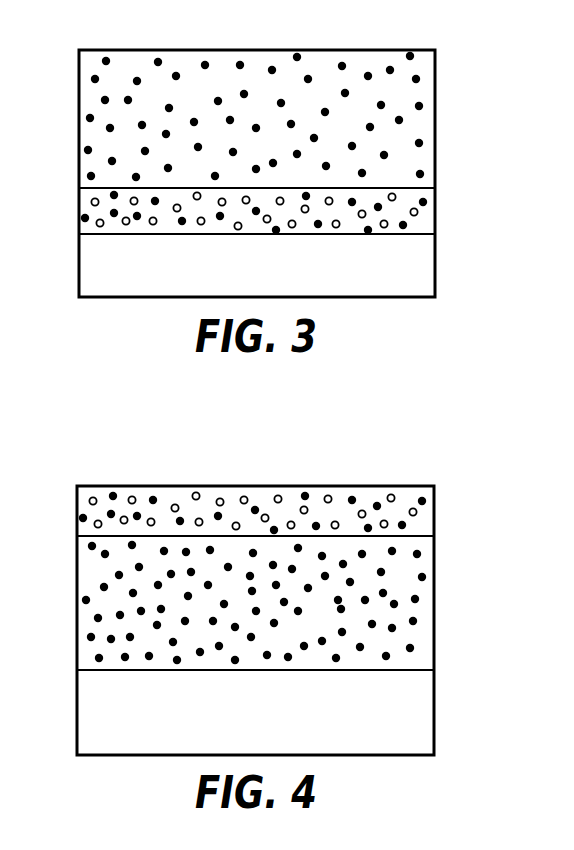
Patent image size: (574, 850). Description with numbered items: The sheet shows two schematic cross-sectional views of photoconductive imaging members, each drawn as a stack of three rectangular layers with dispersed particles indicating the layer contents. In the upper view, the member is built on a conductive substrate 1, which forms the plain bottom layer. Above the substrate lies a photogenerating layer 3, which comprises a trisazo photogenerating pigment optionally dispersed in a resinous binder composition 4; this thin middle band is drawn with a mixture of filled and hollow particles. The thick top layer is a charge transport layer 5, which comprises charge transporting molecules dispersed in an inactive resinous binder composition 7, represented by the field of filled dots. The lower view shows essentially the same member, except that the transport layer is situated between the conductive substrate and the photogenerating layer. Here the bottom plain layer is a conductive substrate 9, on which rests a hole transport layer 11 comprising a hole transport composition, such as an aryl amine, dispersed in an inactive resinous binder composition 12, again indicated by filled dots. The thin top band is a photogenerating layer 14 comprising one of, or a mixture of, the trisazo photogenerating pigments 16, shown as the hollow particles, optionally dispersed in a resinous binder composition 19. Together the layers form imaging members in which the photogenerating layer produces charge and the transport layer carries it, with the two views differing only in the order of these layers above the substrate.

In FIG. 3, the conductive substrate 1 is at (435, 272).
In FIG. 3, the photogenerating layer 3 is at (435, 220).
In FIG. 3, the resinous binder composition 4 is at (92, 202).
In FIG. 3, the charge transport layer 5 is at (435, 97).
In FIG. 3, the inactive resinous binder composition 7 is at (343, 64).
In FIG. 4, the conductive substrate 9 is at (434, 703).
In FIG. 4, the hole transport layer 11 is at (434, 603).
In FIG. 4, the inactive resinous binder composition 12 is at (103, 587).
In FIG. 4, the photogenerating layer 14 is at (434, 513).
In FIG. 4, the trisazo photogenerating pigments 16 is at (91, 501).
In FIG. 4, the resinous binder composition 19 is at (352, 500).